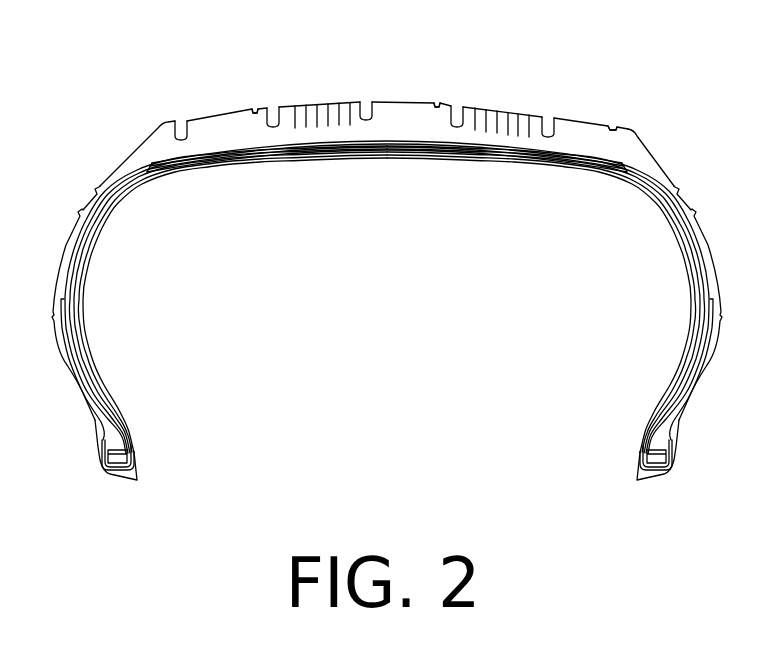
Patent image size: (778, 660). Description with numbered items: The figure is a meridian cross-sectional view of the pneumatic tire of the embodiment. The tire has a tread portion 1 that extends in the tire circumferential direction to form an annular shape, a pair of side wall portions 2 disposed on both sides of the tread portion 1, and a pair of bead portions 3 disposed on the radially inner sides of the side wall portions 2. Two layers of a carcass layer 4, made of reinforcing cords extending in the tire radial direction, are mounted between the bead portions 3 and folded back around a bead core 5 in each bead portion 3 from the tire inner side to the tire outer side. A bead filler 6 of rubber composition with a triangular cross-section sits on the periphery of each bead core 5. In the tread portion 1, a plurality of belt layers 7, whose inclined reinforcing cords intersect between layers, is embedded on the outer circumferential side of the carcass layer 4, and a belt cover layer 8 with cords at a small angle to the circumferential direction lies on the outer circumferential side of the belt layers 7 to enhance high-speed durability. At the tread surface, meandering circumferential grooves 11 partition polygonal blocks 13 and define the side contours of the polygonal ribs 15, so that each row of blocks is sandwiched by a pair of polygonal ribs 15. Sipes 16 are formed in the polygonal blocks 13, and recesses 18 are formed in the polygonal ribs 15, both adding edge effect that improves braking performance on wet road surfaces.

The tread portion 1 is at (580, 120).
The side wall portion 2 is at (78, 222).
The bead portion 3 is at (95, 442).
The carcass layer 4 is at (645, 188).
The bead core 5 is at (120, 458).
The bead filler 6 is at (112, 422).
The belt layer 7 is at (320, 143).
The belt cover layer 8 is at (153, 160).
The circumferential groove 11 is at (178, 121).
The polygonal block 13 is at (287, 110).
The polygonal rib 15 is at (215, 127).
The sipe 16 is at (322, 112).
The recess 18 is at (255, 108).